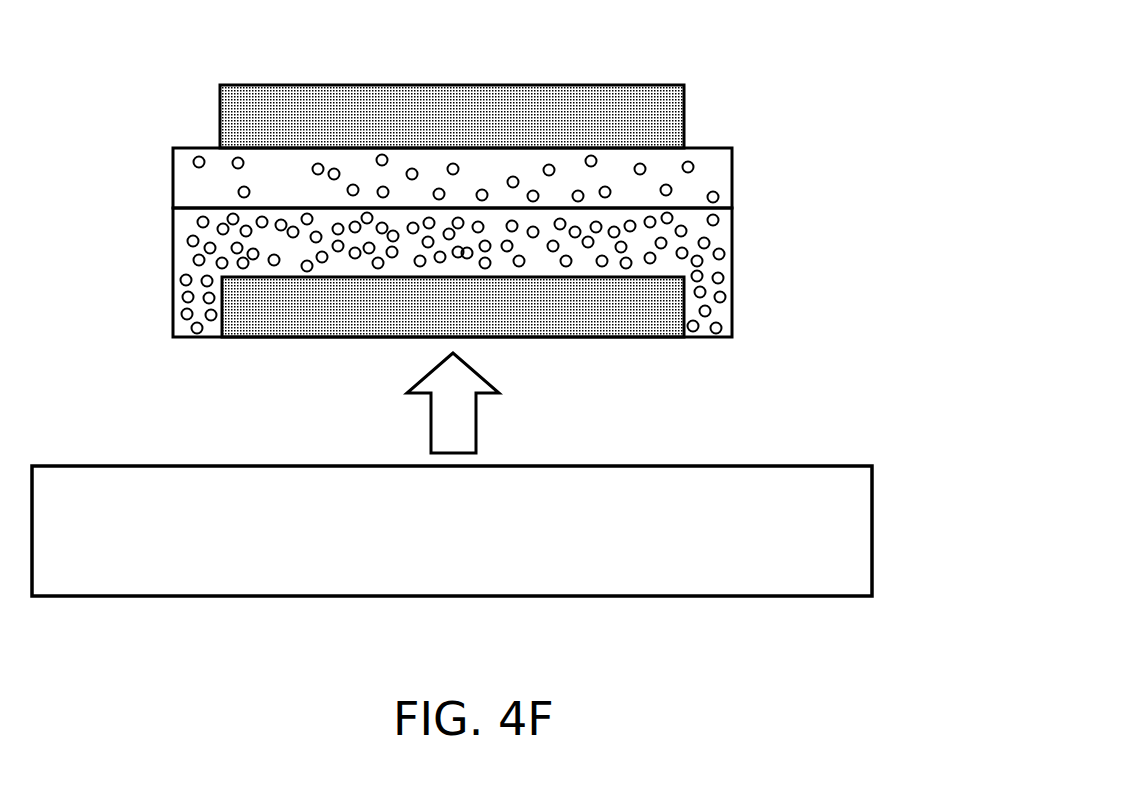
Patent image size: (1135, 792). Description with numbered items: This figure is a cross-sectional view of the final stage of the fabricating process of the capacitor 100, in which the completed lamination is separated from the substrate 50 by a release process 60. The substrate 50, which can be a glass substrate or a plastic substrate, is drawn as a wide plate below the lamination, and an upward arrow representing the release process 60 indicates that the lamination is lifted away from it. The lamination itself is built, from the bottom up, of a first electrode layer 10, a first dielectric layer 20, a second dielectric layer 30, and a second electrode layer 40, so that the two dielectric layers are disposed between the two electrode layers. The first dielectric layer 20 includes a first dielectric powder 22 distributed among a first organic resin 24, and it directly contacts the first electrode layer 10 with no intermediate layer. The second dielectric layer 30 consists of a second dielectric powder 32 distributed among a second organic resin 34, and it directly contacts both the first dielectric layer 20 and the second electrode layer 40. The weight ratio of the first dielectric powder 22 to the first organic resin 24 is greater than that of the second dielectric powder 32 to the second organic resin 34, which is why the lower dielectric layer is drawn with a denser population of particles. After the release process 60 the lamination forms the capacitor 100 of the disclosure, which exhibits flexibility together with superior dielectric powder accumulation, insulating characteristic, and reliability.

The capacitor 100 is at (826, 35).
The first electrode layer 10 is at (684, 304).
The first dielectric layer 20 is at (453, 272).
The first dielectric powder 22 is at (197, 224).
The first organic resin 24 is at (190, 262).
The second dielectric layer 30 is at (453, 179).
The second dielectric powder 32 is at (193, 163).
The second organic resin 34 is at (190, 193).
The second electrode layer 40 is at (684, 113).
The substrate 50 is at (872, 529).
The release process 60 is at (476, 420).